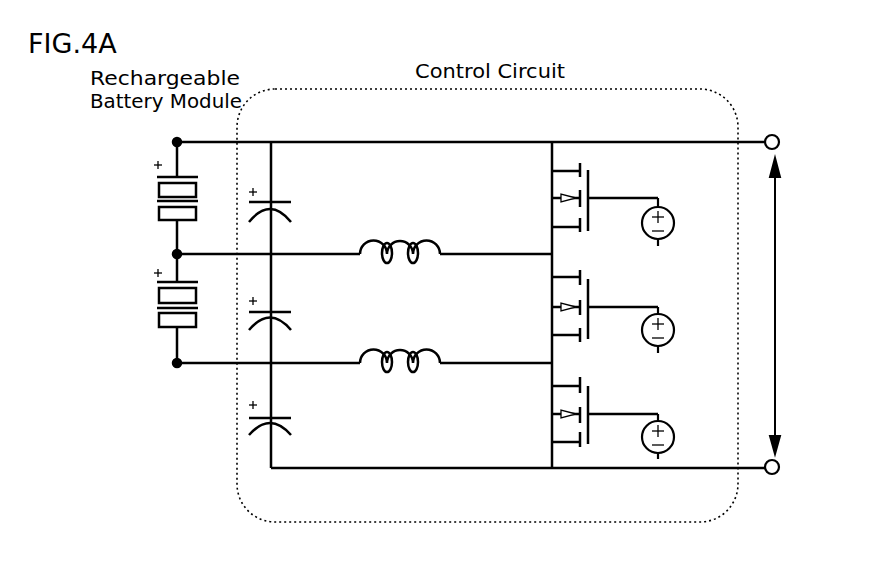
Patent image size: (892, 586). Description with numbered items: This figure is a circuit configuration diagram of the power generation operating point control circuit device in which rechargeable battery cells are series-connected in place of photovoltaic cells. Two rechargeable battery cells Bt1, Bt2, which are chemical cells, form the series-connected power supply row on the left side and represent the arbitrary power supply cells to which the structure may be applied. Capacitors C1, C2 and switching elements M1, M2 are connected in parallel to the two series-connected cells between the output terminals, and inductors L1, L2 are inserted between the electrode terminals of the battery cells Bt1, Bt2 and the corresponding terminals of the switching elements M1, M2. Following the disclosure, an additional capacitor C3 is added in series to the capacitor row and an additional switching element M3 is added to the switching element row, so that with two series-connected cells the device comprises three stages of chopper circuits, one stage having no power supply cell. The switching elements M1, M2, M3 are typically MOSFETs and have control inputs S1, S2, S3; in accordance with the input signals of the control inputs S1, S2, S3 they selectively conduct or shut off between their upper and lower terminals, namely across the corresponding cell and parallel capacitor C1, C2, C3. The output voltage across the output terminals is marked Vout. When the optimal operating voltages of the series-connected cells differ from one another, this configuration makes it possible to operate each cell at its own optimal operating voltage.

The rechargeable battery cell Bt1 is at (150, 198).
The rechargeable battery cell Bt2 is at (150, 308).
The capacitor C1 is at (279, 197).
The capacitor C2 is at (279, 304).
The capacitor C3 is at (277, 410).
The inductor L1 is at (400, 232).
The inductor L2 is at (400, 341).
The switching element M1 is at (583, 197).
The switching element M2 is at (580, 306).
The switching element M3 is at (580, 412).
The control input S1 is at (668, 212).
The control input S2 is at (667, 320).
The control input S3 is at (667, 426).
The output voltage Vout is at (801, 306).